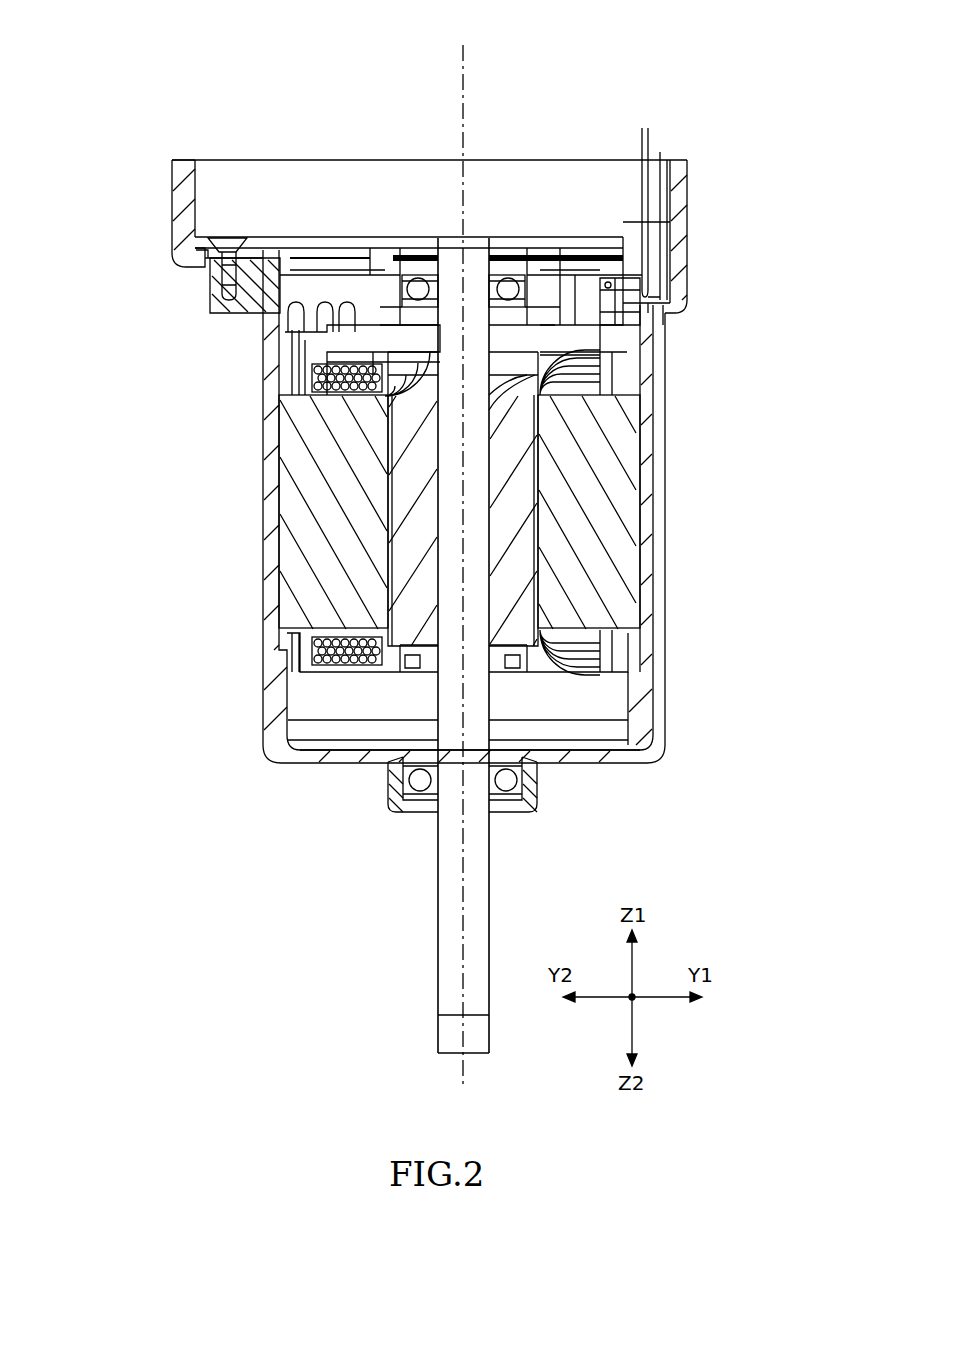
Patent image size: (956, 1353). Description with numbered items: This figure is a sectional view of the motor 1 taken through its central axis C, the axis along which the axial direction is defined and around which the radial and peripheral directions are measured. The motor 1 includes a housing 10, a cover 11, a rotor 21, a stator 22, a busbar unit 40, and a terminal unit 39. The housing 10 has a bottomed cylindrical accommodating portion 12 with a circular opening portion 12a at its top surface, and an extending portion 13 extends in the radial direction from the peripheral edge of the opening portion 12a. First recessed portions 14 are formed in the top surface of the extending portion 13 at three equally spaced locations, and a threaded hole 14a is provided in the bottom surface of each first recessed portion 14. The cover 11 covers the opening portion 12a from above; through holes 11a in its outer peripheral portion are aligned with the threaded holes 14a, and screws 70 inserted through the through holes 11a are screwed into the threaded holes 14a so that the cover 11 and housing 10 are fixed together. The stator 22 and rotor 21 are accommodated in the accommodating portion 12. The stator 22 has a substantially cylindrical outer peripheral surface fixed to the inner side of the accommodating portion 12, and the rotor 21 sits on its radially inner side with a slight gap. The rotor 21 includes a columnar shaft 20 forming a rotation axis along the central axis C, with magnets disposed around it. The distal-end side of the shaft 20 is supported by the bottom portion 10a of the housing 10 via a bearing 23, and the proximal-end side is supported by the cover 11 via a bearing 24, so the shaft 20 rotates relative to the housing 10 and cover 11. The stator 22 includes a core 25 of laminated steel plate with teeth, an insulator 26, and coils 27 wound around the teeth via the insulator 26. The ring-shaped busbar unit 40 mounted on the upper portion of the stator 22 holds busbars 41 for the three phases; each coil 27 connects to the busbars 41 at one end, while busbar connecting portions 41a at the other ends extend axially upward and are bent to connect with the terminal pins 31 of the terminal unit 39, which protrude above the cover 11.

The motor 1 is at (618, 56).
The central axis C is at (468, 78).
The housing 10 is at (695, 172).
The bottom portion 10a is at (360, 766).
The cover 11 is at (305, 242).
The through hole 11a is at (175, 217).
The accommodating portion 12 is at (657, 392).
The opening portion 12a is at (283, 262).
The extending portion 13 is at (405, 288).
The first recessed portion 14 is at (208, 282).
The threaded hole 14a is at (232, 300).
The shaft 20 is at (440, 520).
The rotor 21 is at (510, 612).
The stator 22 is at (590, 533).
The bearing 23 is at (540, 790).
The bearing 24 is at (300, 327).
The core 25 is at (338, 485).
The insulator 26 is at (302, 652).
The coil 27 is at (300, 672).
The terminal pin 31 is at (648, 136).
The terminal unit 39 is at (630, 268).
The busbar unit 40 is at (305, 358).
The busbar 41 is at (645, 313).
The busbar connecting portion 41a is at (670, 296).
The screw 70 is at (202, 257).